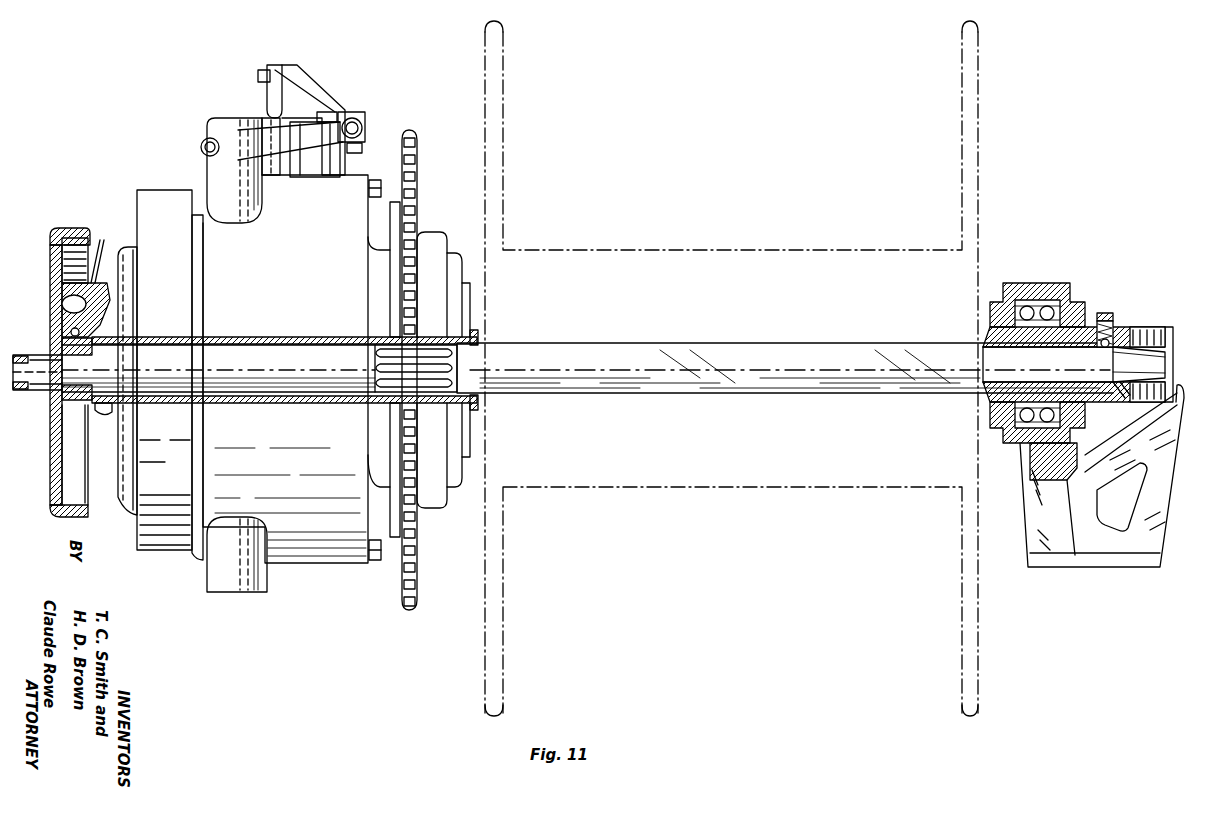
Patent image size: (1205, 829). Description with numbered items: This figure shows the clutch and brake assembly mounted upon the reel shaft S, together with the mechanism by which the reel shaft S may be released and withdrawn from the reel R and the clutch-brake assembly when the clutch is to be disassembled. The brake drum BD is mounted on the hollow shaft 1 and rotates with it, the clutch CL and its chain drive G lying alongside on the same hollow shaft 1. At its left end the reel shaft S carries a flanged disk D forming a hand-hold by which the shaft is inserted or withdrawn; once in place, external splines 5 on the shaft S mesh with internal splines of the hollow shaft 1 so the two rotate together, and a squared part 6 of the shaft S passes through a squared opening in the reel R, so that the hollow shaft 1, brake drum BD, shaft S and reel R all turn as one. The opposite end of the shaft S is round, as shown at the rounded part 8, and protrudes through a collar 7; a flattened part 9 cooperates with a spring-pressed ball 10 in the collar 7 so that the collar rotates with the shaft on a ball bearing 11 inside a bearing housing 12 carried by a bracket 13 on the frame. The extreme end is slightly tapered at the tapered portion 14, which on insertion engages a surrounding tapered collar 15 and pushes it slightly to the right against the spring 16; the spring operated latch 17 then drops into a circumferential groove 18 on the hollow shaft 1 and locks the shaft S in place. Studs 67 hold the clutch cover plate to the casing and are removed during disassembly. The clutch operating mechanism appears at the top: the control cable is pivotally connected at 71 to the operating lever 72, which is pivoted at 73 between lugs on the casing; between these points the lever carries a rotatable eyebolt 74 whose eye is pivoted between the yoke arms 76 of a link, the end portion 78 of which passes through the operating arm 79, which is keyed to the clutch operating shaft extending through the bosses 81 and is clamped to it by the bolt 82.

The hollow shaft 1 is at (108, 408).
The external splines 5 is at (445, 368).
The squared part 6 is at (747, 352).
The collar 7 is at (985, 398).
The rounded part 8 is at (1005, 358).
The flattened part 9 is at (1135, 355).
The spring-pressed ball 10 is at (1110, 320).
The ball bearing 11 is at (1037, 307).
The bearing housing 12 is at (1005, 300).
The bracket 13 is at (1100, 555).
The tapered portion 14 is at (1150, 362).
The tapered collar 15 is at (1125, 398).
The spring 16 is at (1153, 333).
The spring operated latch 17 is at (93, 283).
The circumferential groove 18 is at (113, 414).
The studs 67 is at (375, 180).
The pivotal connection 71 is at (258, 76).
The operating lever 72 is at (300, 100).
The pivot 73 is at (352, 153).
The eyebolt 74 is at (327, 112).
The yoke arms 76 is at (350, 115).
The end portion of link 78 is at (356, 128).
The operating arm 79 is at (271, 148).
The bosses 81 is at (222, 200).
The bolt 82 is at (206, 143).
The flanged disk D is at (50, 268).
The brake drum BD is at (178, 190).
The reel shaft S is at (20, 390).
The gear chain G is at (417, 190).
The reel R is at (650, 250).
The clutch CL is at (292, 562).